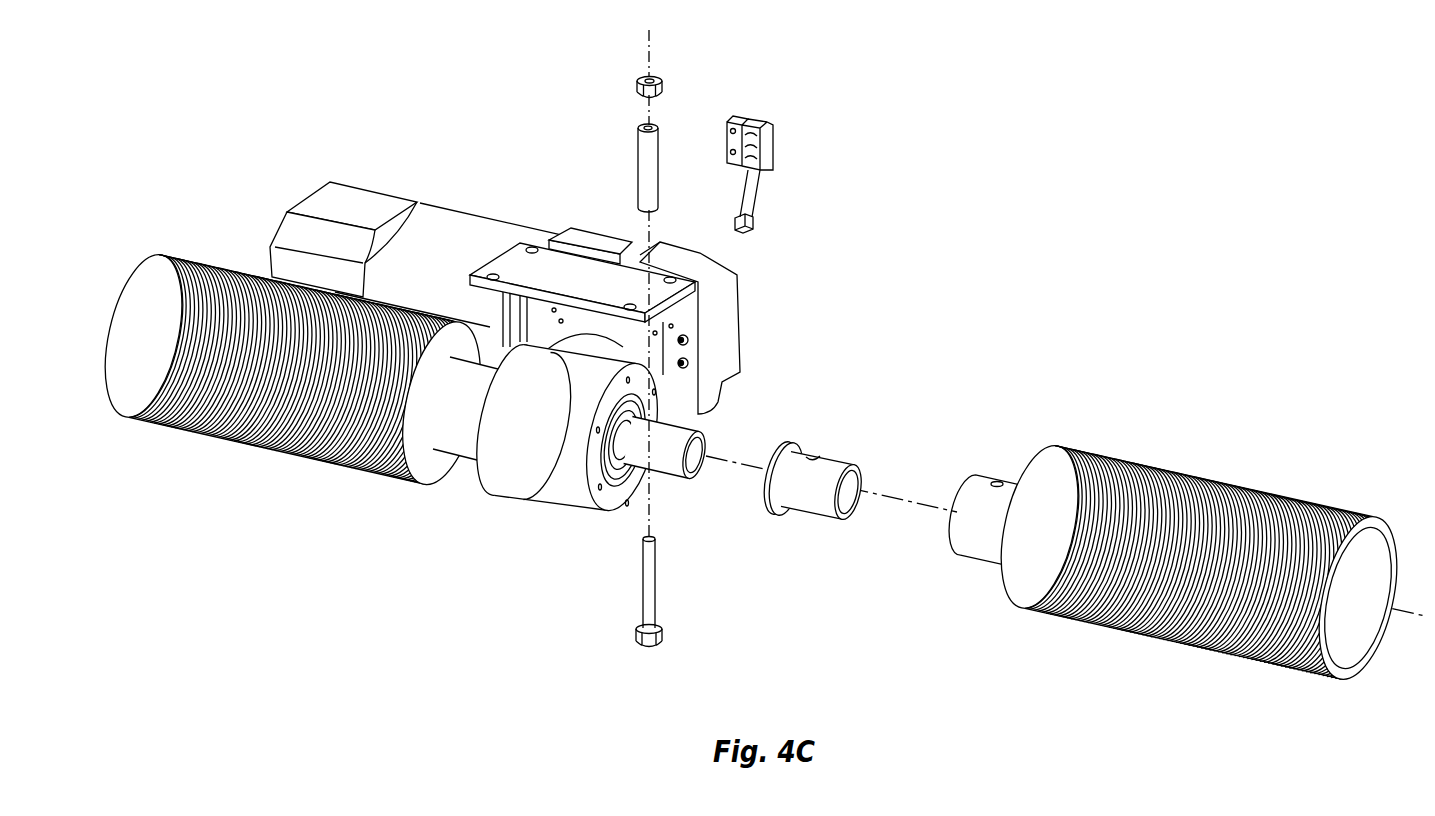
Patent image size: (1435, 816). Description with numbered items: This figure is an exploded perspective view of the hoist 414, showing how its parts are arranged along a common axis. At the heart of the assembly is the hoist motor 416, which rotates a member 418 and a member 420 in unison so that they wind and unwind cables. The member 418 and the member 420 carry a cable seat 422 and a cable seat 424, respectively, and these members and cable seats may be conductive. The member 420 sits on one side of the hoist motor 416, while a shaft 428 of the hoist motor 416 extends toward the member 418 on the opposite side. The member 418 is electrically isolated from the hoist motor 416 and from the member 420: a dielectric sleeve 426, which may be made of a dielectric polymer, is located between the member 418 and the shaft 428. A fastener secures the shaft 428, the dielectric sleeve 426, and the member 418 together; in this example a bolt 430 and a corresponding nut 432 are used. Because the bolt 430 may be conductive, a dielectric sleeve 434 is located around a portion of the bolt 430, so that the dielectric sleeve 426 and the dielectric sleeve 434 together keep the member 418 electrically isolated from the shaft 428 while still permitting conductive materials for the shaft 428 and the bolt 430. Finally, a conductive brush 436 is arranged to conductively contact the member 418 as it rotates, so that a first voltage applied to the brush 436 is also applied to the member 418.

The hoist 414 is at (1127, 157).
The hoist motor 416 is at (378, 198).
The member 418 is at (1229, 654).
The member 420 is at (293, 454).
The cable seat 422 is at (1133, 637).
The cable seat 424 is at (200, 432).
The dielectric sleeve 426 is at (810, 457).
The shaft 428 is at (706, 455).
The bolt 430 is at (657, 598).
The nut 432 is at (637, 87).
The dielectric sleeve 434 is at (638, 173).
The conductive brush 436 is at (780, 145).